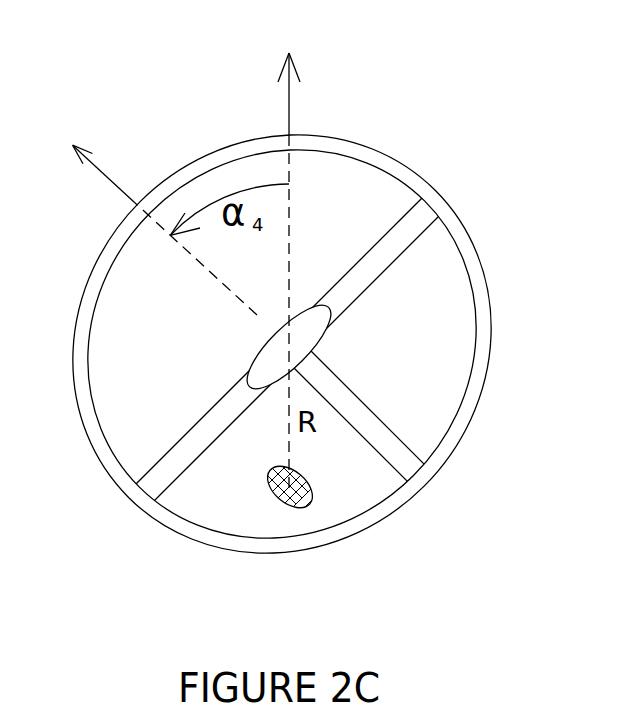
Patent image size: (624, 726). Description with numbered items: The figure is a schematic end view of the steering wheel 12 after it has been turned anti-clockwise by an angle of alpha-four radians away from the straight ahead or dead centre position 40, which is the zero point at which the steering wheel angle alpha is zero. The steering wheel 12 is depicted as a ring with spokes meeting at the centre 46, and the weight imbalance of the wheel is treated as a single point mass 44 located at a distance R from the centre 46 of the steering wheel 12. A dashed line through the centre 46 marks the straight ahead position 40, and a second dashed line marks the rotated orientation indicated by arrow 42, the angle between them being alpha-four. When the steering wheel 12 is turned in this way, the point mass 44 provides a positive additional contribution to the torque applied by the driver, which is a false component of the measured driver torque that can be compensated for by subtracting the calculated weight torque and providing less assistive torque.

The steering wheel 12 is at (415, 173).
The straight ahead or dead centre position 40 is at (292, 256).
The direction arrow at angle alpha 4 42 is at (147, 218).
The point mass 44 is at (310, 498).
The centre of the steering wheel 46 is at (263, 360).